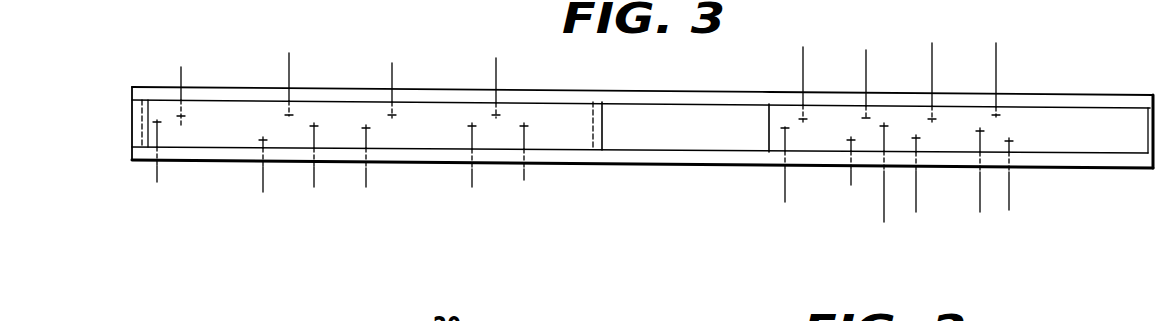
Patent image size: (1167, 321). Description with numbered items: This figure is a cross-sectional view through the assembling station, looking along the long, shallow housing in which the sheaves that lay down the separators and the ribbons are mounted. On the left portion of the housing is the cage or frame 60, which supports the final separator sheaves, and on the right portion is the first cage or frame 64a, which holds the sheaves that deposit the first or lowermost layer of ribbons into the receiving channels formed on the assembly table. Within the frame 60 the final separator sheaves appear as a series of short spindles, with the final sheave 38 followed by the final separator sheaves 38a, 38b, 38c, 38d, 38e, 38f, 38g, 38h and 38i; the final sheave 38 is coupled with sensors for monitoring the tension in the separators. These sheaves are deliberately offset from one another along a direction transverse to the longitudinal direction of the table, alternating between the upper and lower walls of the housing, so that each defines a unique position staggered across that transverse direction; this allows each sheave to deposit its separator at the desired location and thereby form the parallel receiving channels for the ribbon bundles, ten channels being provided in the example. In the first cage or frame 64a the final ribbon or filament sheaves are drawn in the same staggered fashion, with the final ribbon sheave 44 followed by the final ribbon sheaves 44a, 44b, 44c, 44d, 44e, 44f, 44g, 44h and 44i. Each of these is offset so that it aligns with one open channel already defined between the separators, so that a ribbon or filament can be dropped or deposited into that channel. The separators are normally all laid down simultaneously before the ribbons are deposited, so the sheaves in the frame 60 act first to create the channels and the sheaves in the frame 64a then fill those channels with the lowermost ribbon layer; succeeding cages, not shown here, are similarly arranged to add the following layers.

The frame 60 is at (160, 91).
The first cage or frame 64a is at (1034, 96).
The final sheave 38 is at (157, 183).
The final separator sheave 38a is at (183, 72).
The final separator sheave 38b is at (263, 190).
The final separator sheave 38c is at (290, 70).
The final separator sheave 38d is at (314, 186).
The final separator sheave 38e is at (394, 68).
The final separator sheave 38f is at (366, 187).
The final separator sheave 38g is at (472, 187).
The final separator sheave 38h is at (497, 64).
The final separator sheave 38i is at (524, 180).
The final ribbon sheave 44 is at (785, 188).
The final ribbon sheave 44a is at (803, 70).
The final ribbon sheave 44b is at (851, 182).
The final ribbon sheave 44c is at (866, 62).
The final ribbon sheave 44d is at (884, 205).
The final ribbon sheave 44e is at (916, 210).
The final ribbon sheave 44f is at (932, 60).
The final ribbon sheave 44g is at (980, 210).
The final ribbon sheave 44h is at (996, 60).
The final ribbon sheave 44i is at (1009, 210).